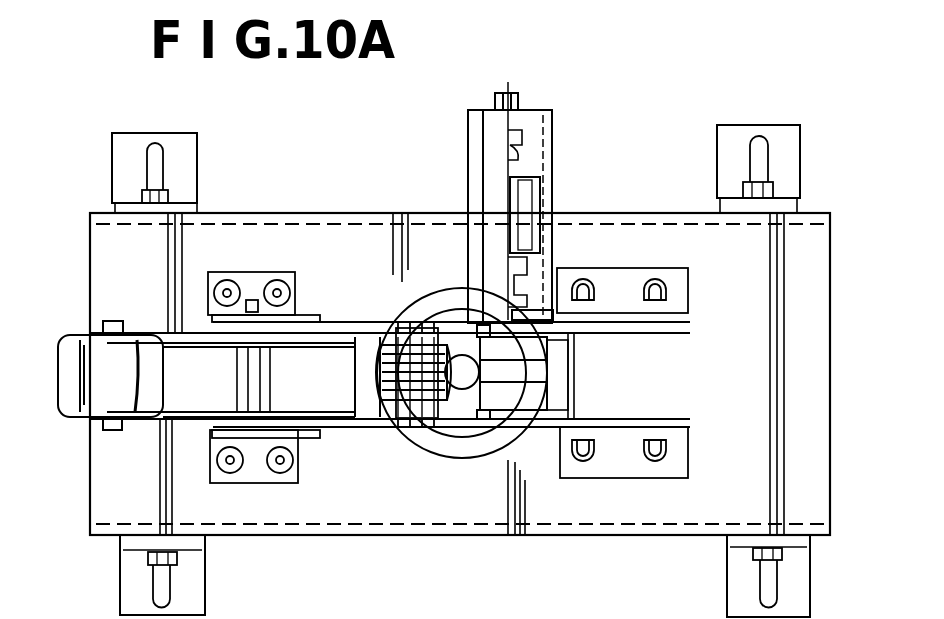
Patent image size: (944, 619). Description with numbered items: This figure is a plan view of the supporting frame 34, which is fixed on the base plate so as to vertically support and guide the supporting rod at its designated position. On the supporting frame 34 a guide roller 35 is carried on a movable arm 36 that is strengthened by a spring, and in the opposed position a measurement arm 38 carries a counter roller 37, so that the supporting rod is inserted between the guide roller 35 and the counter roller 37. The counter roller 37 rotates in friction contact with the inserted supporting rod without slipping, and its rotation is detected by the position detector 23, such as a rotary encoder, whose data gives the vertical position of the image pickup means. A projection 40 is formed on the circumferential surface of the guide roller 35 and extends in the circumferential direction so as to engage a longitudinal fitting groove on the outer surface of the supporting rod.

The supporting frame 34 is at (92, 188).
The movable arm 36 is at (355, 318).
The guide roller 35 is at (418, 318).
The projection 40 is at (415, 440).
The counter roller 37 is at (497, 400).
The measurement arm 38 is at (548, 425).
The position detector 23 is at (540, 188).